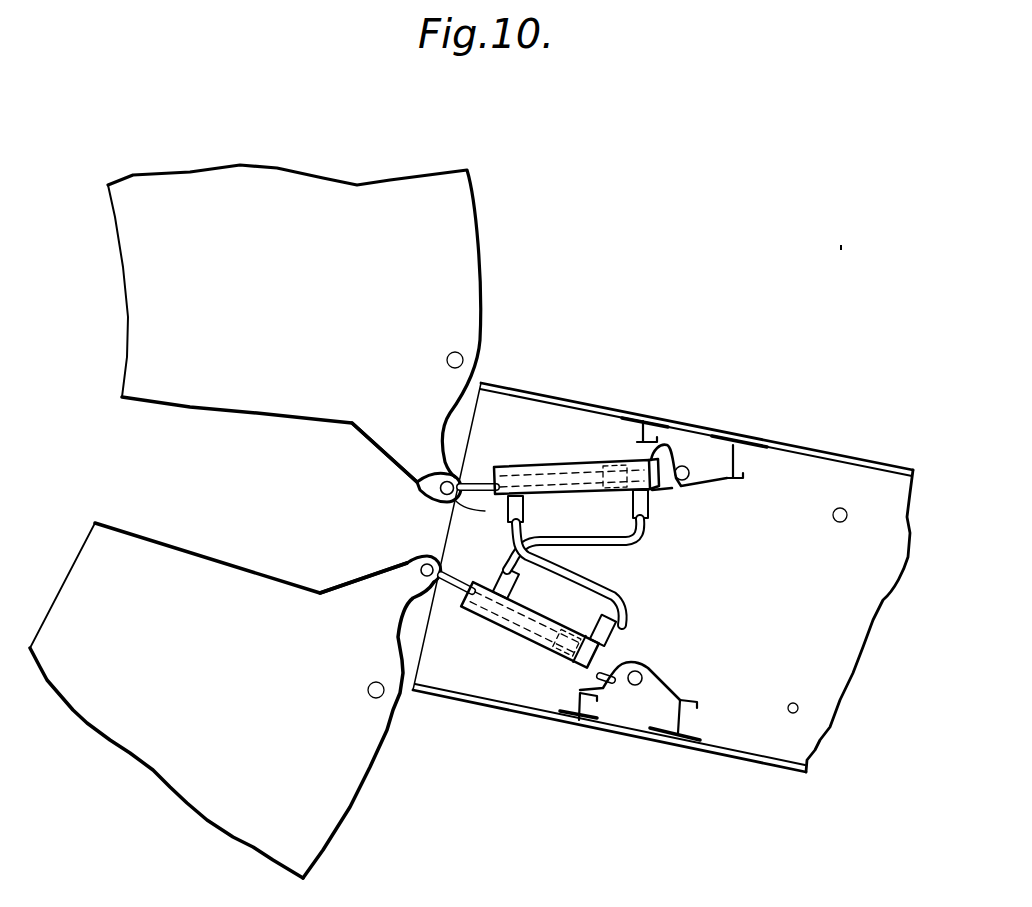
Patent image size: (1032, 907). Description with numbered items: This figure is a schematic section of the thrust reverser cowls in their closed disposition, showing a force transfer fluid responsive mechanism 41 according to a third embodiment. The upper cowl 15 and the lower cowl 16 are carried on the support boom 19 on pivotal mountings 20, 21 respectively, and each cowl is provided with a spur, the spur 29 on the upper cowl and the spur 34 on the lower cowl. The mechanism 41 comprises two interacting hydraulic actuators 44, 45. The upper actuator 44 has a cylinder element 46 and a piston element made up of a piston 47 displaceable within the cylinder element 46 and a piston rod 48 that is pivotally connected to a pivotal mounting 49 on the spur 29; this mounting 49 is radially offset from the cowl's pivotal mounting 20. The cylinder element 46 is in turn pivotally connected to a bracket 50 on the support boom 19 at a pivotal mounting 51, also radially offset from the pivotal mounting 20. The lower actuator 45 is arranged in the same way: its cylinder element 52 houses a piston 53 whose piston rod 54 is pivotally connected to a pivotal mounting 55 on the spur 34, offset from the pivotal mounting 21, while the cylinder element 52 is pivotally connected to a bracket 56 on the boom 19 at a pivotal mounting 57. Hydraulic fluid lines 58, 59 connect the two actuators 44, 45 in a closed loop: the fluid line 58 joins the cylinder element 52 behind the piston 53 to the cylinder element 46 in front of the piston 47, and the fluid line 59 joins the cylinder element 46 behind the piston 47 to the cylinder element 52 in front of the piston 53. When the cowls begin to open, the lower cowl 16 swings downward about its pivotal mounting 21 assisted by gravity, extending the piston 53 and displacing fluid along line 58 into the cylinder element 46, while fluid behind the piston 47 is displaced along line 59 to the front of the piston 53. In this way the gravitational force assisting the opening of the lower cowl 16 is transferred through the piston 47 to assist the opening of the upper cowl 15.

The upper cowl 15 is at (462, 243).
The lower cowl 16 is at (327, 790).
The support boom 19 is at (862, 457).
The pivotal mounting 20 is at (463, 361).
The pivotal mounting 21 is at (379, 698).
The spur 29 is at (412, 448).
The spur 34 is at (387, 590).
The force transfer fluid responsive mechanism 41 is at (593, 572).
The hydraulic actuator 44 is at (639, 448).
The hydraulic actuator 45 is at (569, 695).
The cylinder element 46 is at (580, 460).
The piston 47 is at (647, 447).
The piston rod 48 is at (420, 490).
The pivotal mounting 49 is at (440, 488).
The bracket 50 is at (707, 460).
The pivotal mounting 51 is at (682, 480).
The cylinder element 52 is at (533, 653).
The piston 53 is at (570, 657).
The piston rod 54 is at (443, 558).
The pivotal mounting 55 is at (420, 569).
The bracket 56 is at (648, 707).
The pivotal mounting 57 is at (642, 672).
The hydraulic fluid line 58 is at (640, 541).
The hydraulic fluid line 59 is at (625, 604).